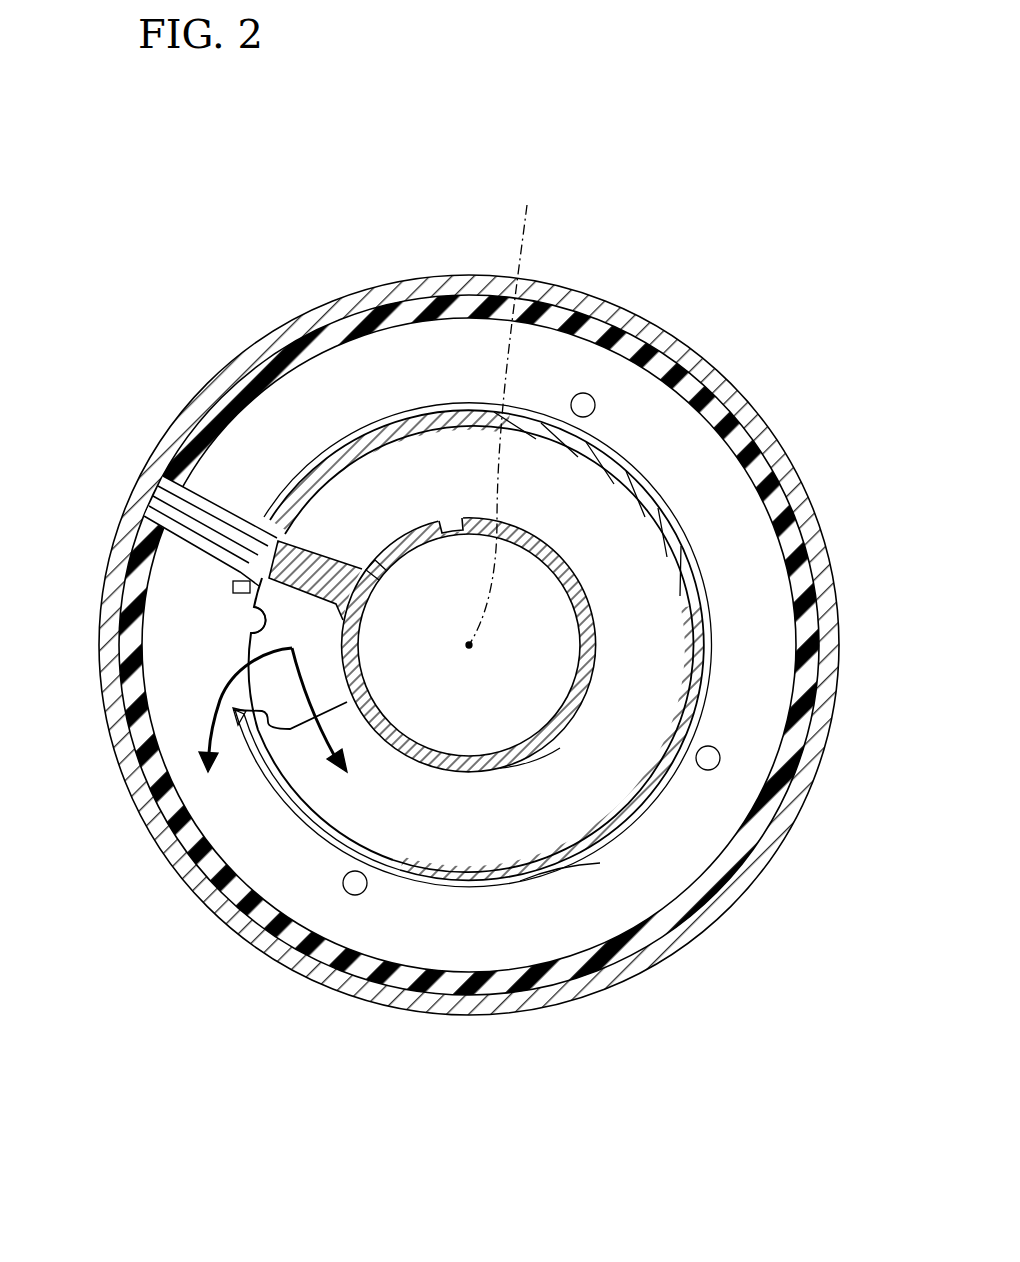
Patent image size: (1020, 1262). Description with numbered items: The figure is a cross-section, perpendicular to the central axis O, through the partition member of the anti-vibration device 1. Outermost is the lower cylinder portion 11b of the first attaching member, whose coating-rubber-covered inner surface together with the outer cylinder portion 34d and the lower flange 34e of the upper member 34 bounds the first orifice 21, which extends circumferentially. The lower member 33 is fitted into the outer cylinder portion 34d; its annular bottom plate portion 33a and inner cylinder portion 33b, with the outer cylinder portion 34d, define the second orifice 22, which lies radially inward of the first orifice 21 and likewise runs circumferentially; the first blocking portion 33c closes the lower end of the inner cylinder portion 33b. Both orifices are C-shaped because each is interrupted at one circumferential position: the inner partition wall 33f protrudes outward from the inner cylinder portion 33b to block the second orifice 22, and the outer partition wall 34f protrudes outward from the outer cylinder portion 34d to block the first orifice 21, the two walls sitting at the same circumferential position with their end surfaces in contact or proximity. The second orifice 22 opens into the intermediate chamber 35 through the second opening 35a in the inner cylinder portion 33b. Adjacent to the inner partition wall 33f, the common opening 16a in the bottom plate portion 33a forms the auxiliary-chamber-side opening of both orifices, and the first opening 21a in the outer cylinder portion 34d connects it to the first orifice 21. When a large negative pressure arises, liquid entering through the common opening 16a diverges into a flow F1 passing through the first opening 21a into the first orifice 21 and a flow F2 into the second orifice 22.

The anti-vibration device 1 is at (150, 222).
The lower cylinder portion 11b is at (612, 318).
The common opening 16a is at (265, 612).
The first orifice 21 is at (469, 607).
The first opening 21a is at (235, 713).
The second orifice 22 is at (660, 657).
The lower member 33 is at (546, 642).
The bottom plate portion 33a is at (617, 760).
The inner cylinder portion 33b is at (528, 760).
The first blocking portion 33c is at (442, 730).
The inner partition wall 33f is at (323, 553).
The upper member 34 is at (465, 673).
The outer cylinder portion 34d is at (677, 550).
The lower flange 34e is at (557, 935).
The outer partition wall 34f is at (226, 510).
The intermediate chamber 35 is at (545, 657).
The second opening 35a is at (455, 522).
The central axis O is at (505, 407).
The flow F1 is at (232, 684).
The flow F2 is at (317, 733).